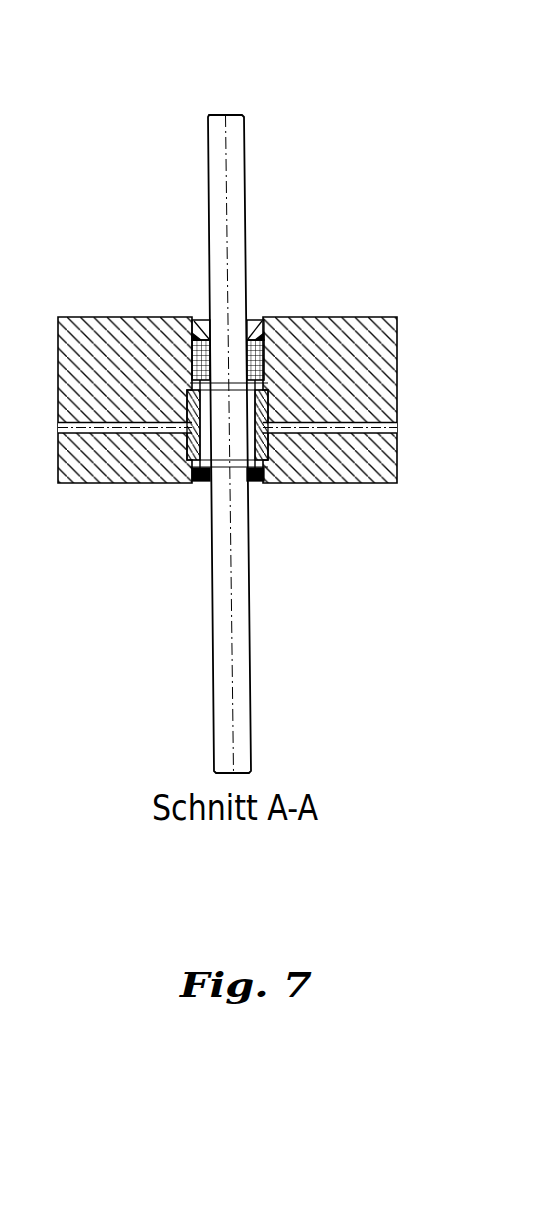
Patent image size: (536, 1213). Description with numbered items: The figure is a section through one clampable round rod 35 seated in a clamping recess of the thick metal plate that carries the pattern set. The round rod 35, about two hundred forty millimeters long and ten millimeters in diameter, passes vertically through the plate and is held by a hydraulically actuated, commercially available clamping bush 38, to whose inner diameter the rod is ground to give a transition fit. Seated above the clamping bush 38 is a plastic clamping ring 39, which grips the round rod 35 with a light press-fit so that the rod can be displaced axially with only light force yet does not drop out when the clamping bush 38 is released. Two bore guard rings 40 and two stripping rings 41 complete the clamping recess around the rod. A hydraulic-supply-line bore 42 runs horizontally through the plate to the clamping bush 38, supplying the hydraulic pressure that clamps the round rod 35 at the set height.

The round rod 35 is at (249, 603).
The clamping bush 38 is at (268, 450).
The plastic clamping ring 39 is at (265, 356).
The bore guard ring 40 is at (206, 322).
The stripping ring 41 is at (252, 322).
The hydraulic-supply-line bore 42 is at (121, 426).